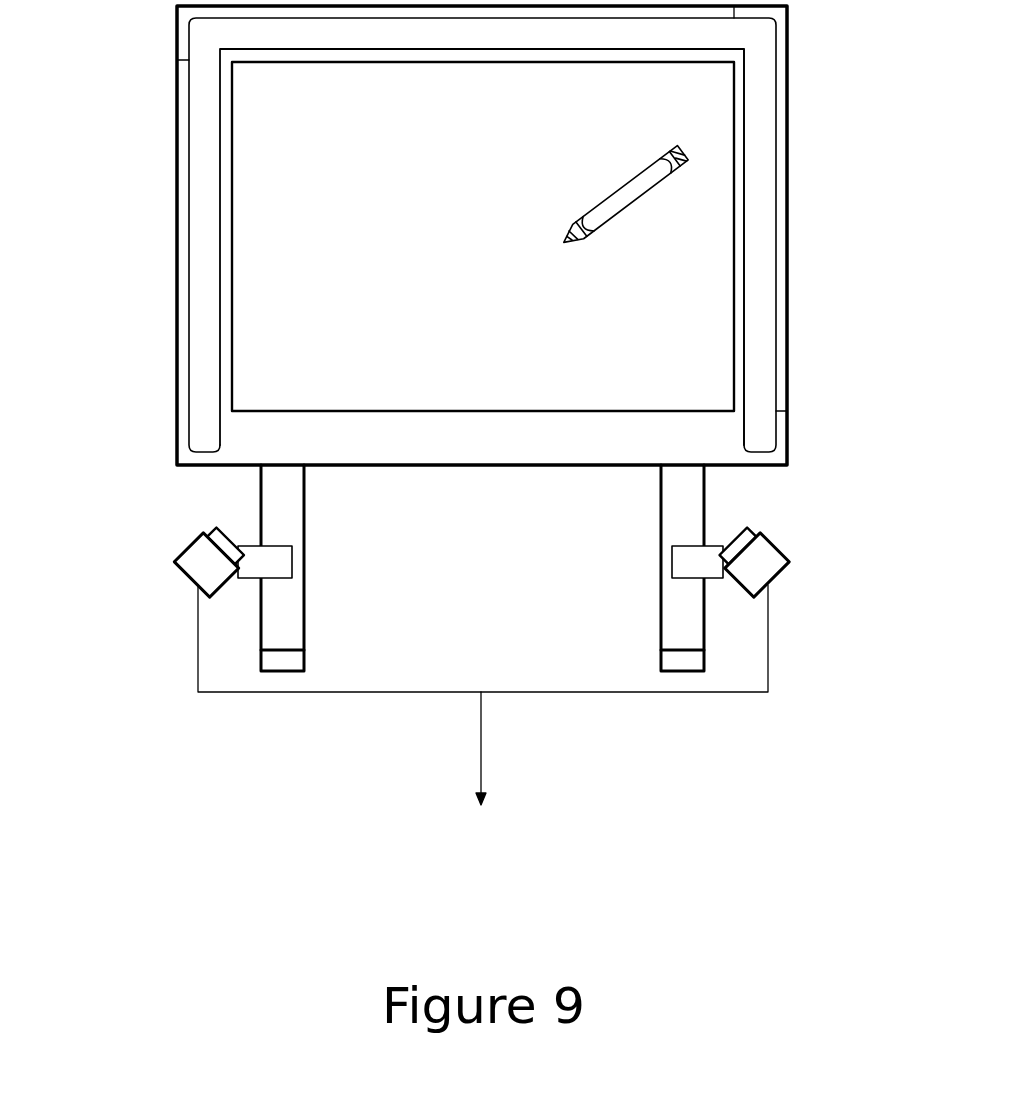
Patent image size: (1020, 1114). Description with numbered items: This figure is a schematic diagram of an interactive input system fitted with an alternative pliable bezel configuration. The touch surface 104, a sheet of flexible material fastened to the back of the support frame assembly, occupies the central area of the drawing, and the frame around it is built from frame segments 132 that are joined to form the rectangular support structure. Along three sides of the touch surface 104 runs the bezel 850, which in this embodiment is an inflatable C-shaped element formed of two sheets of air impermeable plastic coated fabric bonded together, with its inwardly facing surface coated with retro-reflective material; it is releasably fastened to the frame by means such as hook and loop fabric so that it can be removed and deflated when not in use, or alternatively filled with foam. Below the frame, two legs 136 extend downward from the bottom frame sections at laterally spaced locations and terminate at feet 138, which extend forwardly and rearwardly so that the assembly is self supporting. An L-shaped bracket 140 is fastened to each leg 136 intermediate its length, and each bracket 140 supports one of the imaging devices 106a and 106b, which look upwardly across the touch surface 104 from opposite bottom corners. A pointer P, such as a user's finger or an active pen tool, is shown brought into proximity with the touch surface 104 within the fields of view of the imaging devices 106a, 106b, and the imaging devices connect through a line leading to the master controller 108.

The touch surface 104 is at (398, 160).
The bezel 850 is at (210, 360).
The frame segment 132 is at (588, 440).
The pointer P is at (640, 182).
The leg 136 is at (280, 507).
The foot 138 is at (290, 662).
The L-shaped bracket 140 is at (270, 562).
The imaging device 106a is at (210, 577).
The imaging device 106b is at (755, 577).
The master controller connection 108 is at (483, 751).